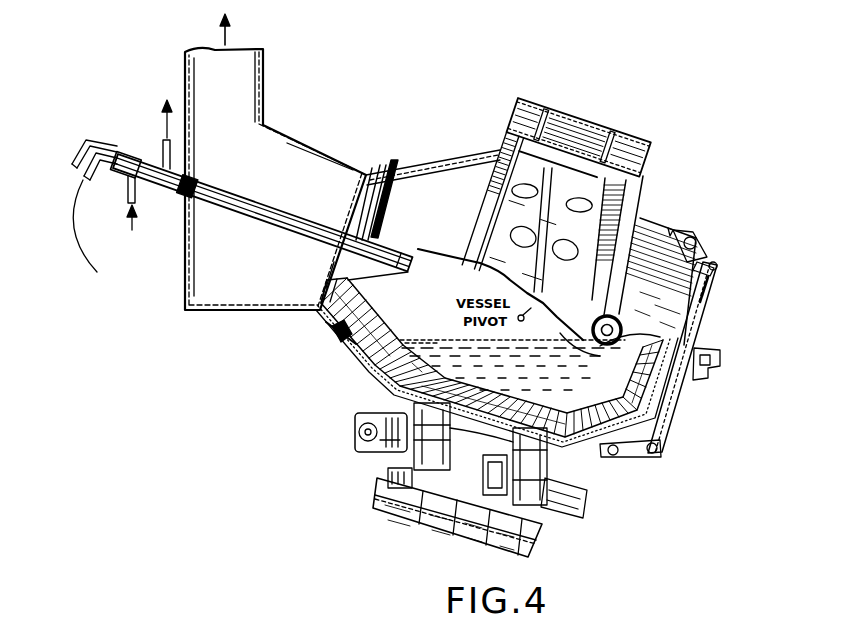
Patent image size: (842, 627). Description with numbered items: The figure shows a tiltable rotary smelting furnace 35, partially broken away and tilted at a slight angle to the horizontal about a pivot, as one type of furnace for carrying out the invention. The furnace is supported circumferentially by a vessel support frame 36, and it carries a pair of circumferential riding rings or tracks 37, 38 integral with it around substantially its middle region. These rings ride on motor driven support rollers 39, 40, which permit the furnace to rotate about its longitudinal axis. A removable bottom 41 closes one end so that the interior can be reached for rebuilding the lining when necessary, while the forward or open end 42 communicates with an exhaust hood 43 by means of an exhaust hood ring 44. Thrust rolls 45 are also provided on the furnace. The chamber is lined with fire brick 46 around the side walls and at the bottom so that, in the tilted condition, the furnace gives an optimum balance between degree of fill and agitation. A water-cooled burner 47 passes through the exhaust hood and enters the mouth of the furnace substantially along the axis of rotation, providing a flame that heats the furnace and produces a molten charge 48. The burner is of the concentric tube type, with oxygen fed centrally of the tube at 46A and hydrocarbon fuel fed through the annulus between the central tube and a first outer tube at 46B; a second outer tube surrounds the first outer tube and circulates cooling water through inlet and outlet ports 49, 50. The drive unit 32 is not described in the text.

The drive unit 32 is at (430, 402).
The rotary furnace 35 is at (712, 165).
The vessel support frame 36 is at (598, 125).
The circumferential riding ring 37 is at (505, 152).
The circumferential riding ring 38 is at (637, 191).
The motor driven support roller 39 is at (407, 472).
The motor driven support roller 40 is at (528, 533).
The removable bottom 41 is at (717, 296).
The forward or open end 42 is at (333, 268).
The exhaust hood 43 is at (268, 96).
The exhaust hood ring 44 is at (340, 337).
The thrust rolls 45 is at (660, 337).
The fire brick 46 is at (350, 292).
The central oxygen feed 46A is at (86, 164).
The hydrocarbon fuel feed 46B is at (80, 142).
The water-cooled burner 47 is at (128, 150).
The molten charge 48 is at (430, 340).
The water inlet port 49 is at (137, 189).
The water outlet port 50 is at (161, 148).